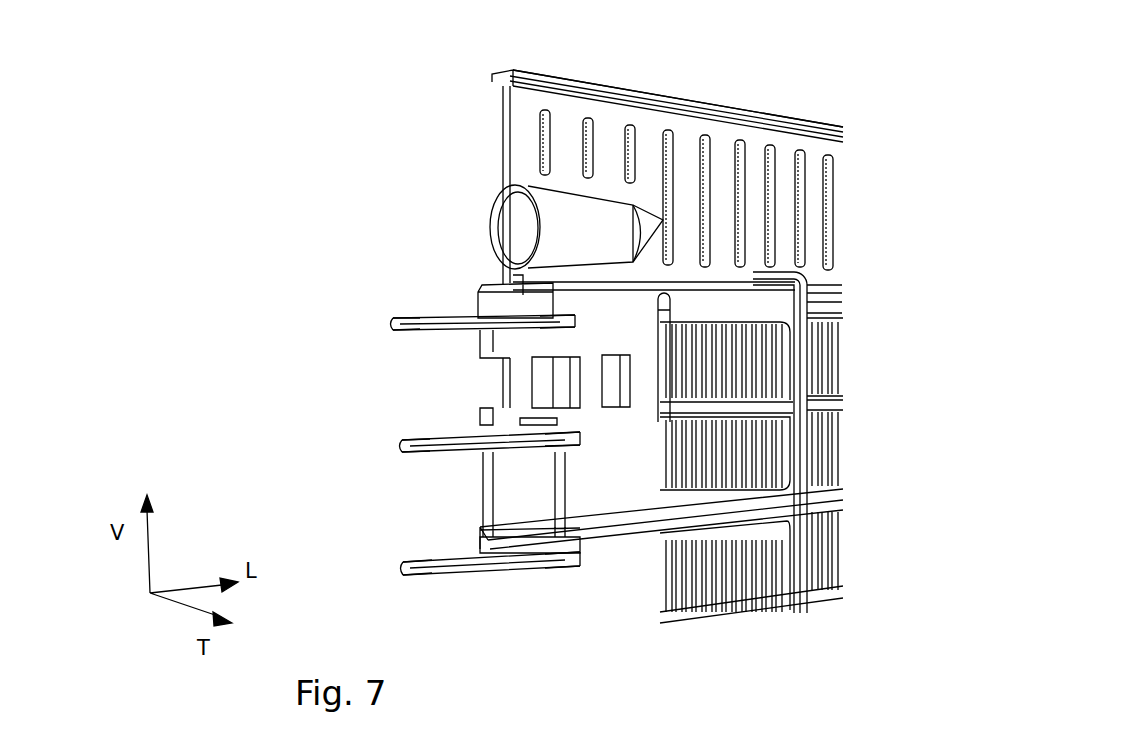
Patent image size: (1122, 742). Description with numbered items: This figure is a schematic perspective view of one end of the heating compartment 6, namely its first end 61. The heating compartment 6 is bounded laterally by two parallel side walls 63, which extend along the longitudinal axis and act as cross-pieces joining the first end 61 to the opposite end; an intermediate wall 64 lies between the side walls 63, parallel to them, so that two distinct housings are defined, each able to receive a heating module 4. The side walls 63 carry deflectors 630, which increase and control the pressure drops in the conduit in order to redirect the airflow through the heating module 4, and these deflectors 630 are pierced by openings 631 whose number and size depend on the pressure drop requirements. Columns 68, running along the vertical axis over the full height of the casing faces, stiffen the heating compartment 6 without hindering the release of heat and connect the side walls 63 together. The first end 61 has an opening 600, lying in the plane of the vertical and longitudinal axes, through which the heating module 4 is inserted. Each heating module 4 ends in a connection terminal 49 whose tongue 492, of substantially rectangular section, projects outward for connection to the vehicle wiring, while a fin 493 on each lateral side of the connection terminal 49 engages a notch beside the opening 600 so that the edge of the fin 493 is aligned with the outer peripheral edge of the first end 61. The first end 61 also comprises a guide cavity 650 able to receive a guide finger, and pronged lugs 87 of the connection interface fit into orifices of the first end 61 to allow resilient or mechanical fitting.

The heating compartment 6 is at (737, 82).
The deflector 630 is at (815, 145).
The opening 631 is at (832, 185).
The side wall 63 is at (828, 290).
The heating module 4 is at (865, 347).
The column 68 is at (813, 443).
The intermediate wall 64 is at (637, 543).
The first end 61 is at (630, 617).
The guide cavity 650 is at (507, 233).
The opening 600 is at (535, 612).
The connection terminal 49 is at (363, 320).
The tongue 492 is at (410, 317).
The fin 493 is at (537, 320).
The pronged lug 87 is at (613, 380).